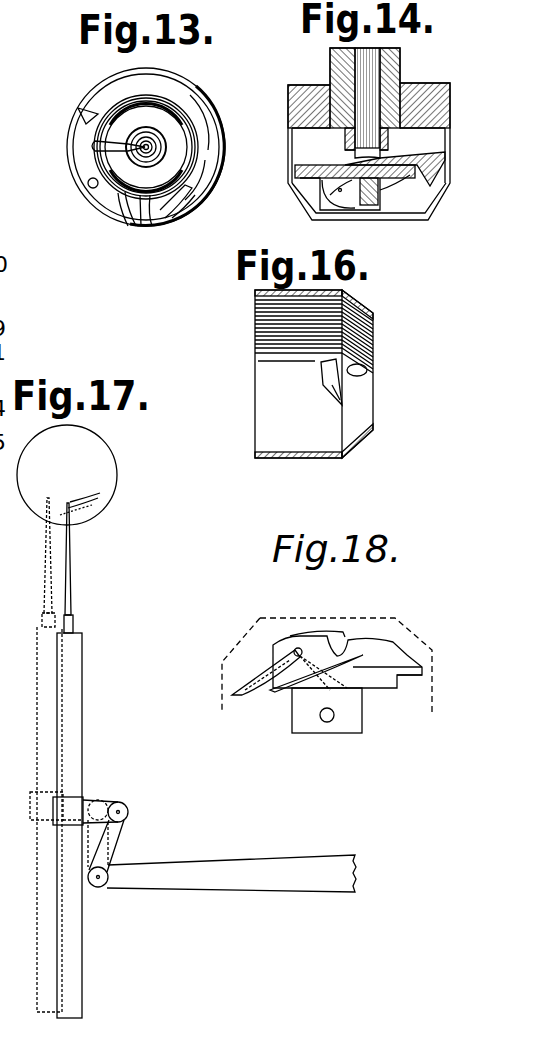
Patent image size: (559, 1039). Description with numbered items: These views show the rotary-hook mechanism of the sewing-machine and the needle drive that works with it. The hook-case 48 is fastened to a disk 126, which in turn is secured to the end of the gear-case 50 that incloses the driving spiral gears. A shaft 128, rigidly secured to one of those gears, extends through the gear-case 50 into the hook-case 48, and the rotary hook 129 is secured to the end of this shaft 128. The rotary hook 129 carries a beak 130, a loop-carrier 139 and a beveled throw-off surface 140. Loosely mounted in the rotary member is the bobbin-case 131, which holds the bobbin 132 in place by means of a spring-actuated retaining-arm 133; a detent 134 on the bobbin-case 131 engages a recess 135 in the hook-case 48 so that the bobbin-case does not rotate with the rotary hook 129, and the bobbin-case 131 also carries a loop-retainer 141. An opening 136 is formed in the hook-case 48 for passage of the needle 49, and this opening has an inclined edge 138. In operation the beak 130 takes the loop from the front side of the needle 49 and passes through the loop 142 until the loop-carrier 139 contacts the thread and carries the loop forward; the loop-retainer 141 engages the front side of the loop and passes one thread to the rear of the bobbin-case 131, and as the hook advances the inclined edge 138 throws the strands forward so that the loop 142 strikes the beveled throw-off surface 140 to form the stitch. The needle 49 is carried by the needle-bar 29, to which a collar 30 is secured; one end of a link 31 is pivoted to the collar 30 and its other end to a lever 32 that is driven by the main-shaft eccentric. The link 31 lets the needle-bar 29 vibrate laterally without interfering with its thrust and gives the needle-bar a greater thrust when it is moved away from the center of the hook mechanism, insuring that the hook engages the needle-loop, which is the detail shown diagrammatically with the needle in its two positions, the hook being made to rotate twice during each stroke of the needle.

In FIG. 17, the needle-bar 29 is at (80, 701).
In FIG. 17, the collar 30 is at (78, 800).
In FIG. 17, the link 31 is at (121, 837).
In FIG. 17, the lever 32 is at (231, 873).
In FIG. 14, the hook-case 48 is at (452, 147).
In FIG. 16, the hook-case 48 is at (314, 374).
In FIG. 18, the hook-case 48 is at (411, 633).
In FIG. 17, the needle 49 is at (69, 590).
In FIG. 14, the gear-case 50 is at (336, 58).
In FIG. 13, the disk 126 is at (107, 207).
In FIG. 14, the disk 126 is at (437, 82).
In FIG. 13, the shaft 128 is at (330, 74).
In FIG. 14, the shaft 128 is at (330, 74).
In FIG. 13, the rotary hook 129 is at (113, 76).
In FIG. 14, the rotary hook 129 is at (447, 174).
In FIG. 18, the rotary hook 129 is at (423, 672).
In FIG. 13, the beak 130 is at (180, 218).
In FIG. 17, the beak 130 is at (92, 498).
In FIG. 18, the beak 130 is at (234, 693).
In FIG. 14, the bobbin-case 131 is at (395, 187).
In FIG. 18, the bobbin-case 131 is at (370, 637).
In FIG. 13, the bobbin 132 is at (163, 112).
In FIG. 13, the retaining-arm 133 is at (94, 147).
In FIG. 14, the retaining-arm 133 is at (350, 187).
In FIG. 13, the detent 134 is at (145, 220).
In FIG. 16, the recess 135 is at (367, 370).
In FIG. 16, the opening 136 is at (322, 376).
In FIG. 18, the opening 136 is at (363, 686).
In FIG. 16, the inclined edge 138 is at (335, 396).
In FIG. 18, the inclined edge 138 is at (307, 653).
In FIG. 18, the loop-carrier 139 is at (276, 694).
In FIG. 13, the beveled throw-off surface 140 is at (100, 95).
In FIG. 18, the beveled throw-off surface 140 is at (408, 649).
In FIG. 13, the loop-retainer 141 is at (121, 196).
In FIG. 18, the loop 142 is at (273, 663).